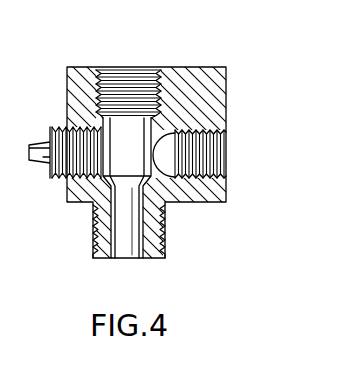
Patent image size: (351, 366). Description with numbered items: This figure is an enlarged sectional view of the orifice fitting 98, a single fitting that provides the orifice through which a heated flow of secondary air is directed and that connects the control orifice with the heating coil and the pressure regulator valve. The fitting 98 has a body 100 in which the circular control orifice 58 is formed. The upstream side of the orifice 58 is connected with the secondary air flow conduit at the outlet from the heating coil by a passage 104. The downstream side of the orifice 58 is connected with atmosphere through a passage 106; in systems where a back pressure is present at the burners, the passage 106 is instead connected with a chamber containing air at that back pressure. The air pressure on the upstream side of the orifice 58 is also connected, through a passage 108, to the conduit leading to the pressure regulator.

The orifice fitting 98 is at (262, 74).
The body 100 is at (207, 78).
The passage 108 is at (107, 68).
The passage 106 is at (226, 173).
The passage 104 is at (145, 247).
The control orifice 58 is at (158, 153).